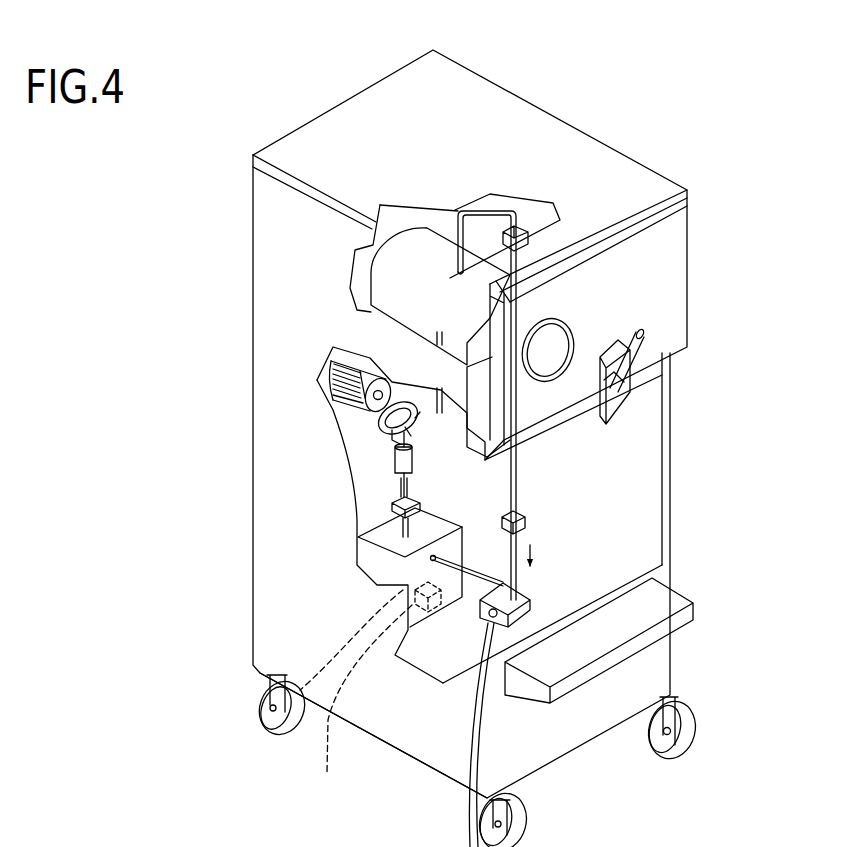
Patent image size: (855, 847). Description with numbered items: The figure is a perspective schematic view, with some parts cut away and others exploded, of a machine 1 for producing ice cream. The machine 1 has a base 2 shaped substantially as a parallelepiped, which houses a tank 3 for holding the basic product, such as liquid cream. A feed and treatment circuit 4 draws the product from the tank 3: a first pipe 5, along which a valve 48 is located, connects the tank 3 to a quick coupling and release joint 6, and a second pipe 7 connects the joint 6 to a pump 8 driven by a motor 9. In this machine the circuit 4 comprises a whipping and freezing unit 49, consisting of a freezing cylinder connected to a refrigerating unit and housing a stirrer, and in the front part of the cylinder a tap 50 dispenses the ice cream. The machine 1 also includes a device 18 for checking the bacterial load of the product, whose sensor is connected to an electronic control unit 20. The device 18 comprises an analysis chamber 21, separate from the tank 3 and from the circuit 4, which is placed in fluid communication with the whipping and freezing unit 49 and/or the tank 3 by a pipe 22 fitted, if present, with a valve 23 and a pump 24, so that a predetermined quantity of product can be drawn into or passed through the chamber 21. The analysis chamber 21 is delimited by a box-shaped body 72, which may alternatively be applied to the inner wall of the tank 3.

The machine 1 is at (629, 124).
The base 2 is at (323, 714).
The tank 3 is at (366, 557).
The feed and treatment circuit 4 is at (398, 525).
The first pipe 5 is at (372, 587).
The quick coupling and release joint 6 is at (392, 456).
The second pipe 7 is at (428, 341).
The pump 8 is at (370, 424).
The motor 9 is at (336, 361).
The device for checking the bacterial load 18 is at (527, 538).
The electronic control unit 20 is at (492, 620).
The analysis chamber 21 is at (257, 712).
The pipes 22 is at (498, 210).
The valves 23 is at (528, 511).
The pumps 24 is at (534, 238).
The valve 48 is at (388, 498).
The whipping and freezing unit 49 is at (414, 236).
The tap 50 is at (634, 390).
The box-shaped body 72 is at (356, 697).